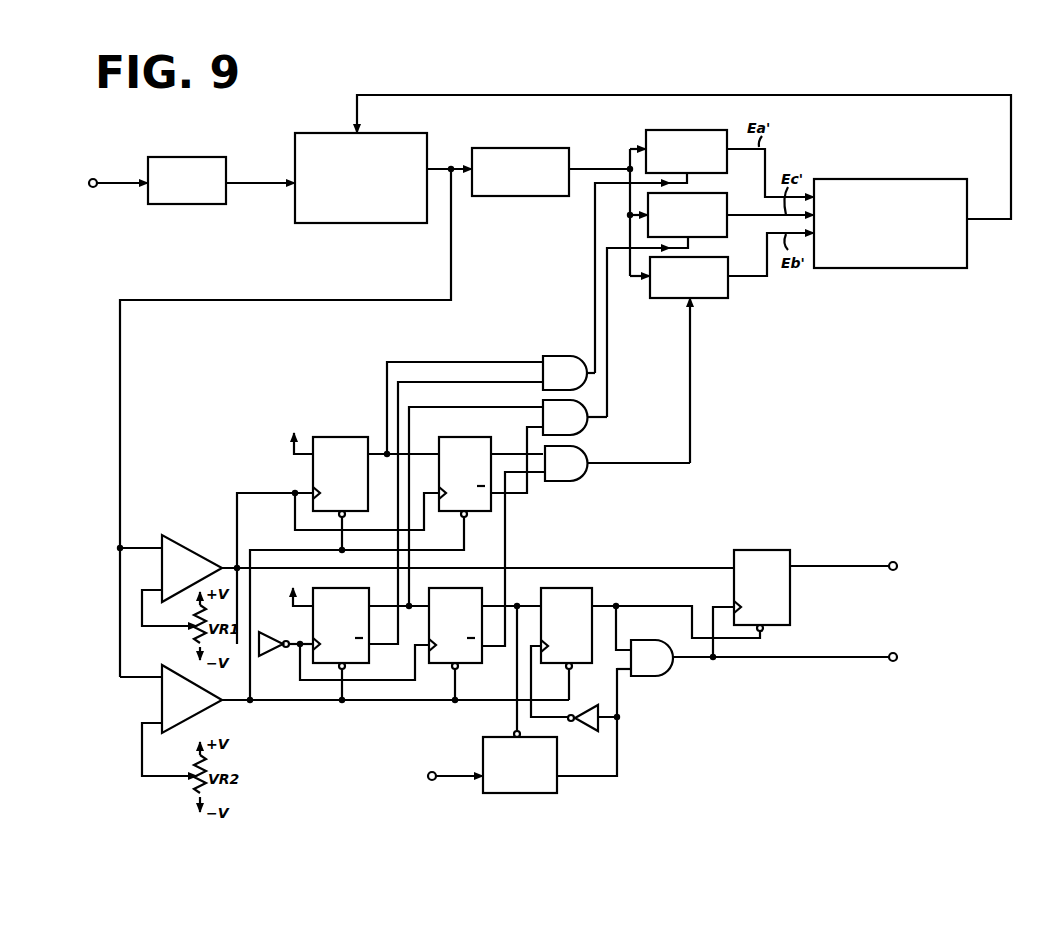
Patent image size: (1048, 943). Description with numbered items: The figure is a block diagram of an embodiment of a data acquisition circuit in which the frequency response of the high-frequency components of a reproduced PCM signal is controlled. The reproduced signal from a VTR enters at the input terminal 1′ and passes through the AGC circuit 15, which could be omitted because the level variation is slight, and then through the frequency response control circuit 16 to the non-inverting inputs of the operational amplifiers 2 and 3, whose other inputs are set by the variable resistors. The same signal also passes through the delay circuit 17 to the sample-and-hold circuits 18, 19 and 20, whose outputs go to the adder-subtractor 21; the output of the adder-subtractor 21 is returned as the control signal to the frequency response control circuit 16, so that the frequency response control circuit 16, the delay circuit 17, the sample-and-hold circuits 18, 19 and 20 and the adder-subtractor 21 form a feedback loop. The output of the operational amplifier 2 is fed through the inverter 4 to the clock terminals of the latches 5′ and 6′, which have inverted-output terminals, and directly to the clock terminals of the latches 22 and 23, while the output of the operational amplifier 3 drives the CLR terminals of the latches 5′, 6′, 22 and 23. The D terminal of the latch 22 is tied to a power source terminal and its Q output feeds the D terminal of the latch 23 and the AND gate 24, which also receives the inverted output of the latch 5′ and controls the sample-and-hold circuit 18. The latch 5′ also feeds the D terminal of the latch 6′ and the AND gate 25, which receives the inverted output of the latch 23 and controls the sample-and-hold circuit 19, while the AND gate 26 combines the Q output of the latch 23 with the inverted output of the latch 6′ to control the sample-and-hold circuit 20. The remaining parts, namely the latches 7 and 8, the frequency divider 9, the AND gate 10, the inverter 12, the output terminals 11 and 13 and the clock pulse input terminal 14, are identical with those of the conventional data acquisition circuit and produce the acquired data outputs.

The input terminal 1′ is at (93, 179).
The AGC circuit 15 is at (168, 157).
The frequency response control circuit 16 is at (333, 133).
The delay circuit 17 is at (513, 148).
The sample-and-hold circuit 18 is at (700, 130).
The sample-and-hold circuit 19 is at (727, 209).
The sample-and-hold circuit 20 is at (712, 298).
The adder-subtractor 21 is at (878, 179).
The latch 22 is at (333, 437).
The latch 23 is at (471, 437).
The AND gate 24 is at (565, 356).
The AND gate 25 is at (587, 425).
The AND gate 26 is at (565, 480).
The operational amplifier 2 is at (188, 547).
The operational amplifier 3 is at (172, 665).
The inverter 4 is at (270, 634).
The latch 5′ is at (358, 665).
The latch 6′ is at (470, 665).
The latch 7 is at (752, 550).
The latch 8 is at (575, 588).
The frequency divider 9 is at (479, 758).
The AND gate 10 is at (651, 640).
The output terminal 11 is at (892, 560).
The inverter 12 is at (590, 731).
The output terminal 13 is at (892, 653).
The clock pulse input terminal 14 is at (428, 776).